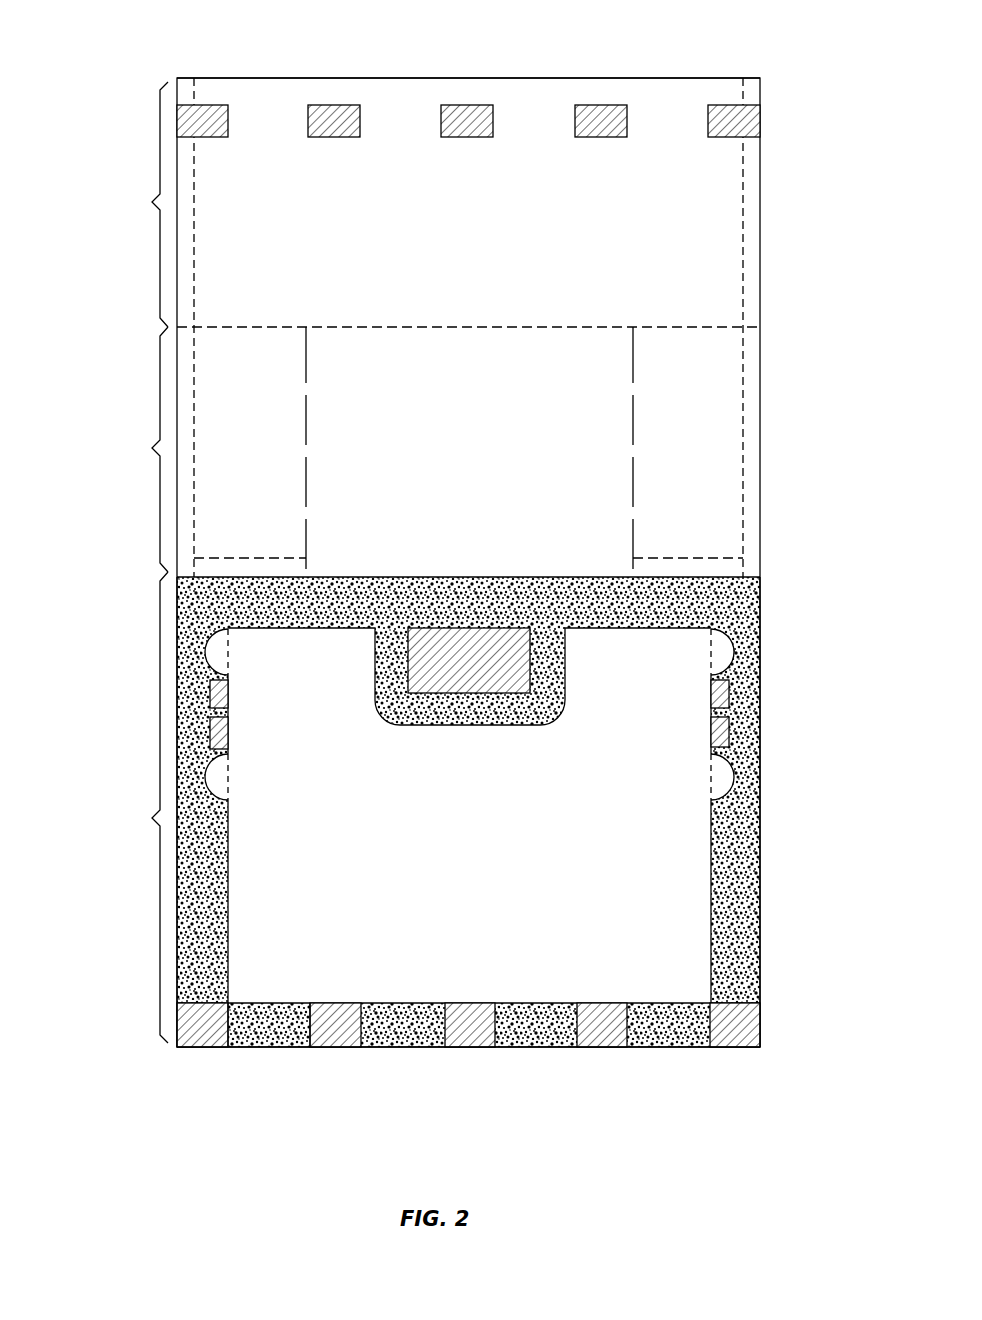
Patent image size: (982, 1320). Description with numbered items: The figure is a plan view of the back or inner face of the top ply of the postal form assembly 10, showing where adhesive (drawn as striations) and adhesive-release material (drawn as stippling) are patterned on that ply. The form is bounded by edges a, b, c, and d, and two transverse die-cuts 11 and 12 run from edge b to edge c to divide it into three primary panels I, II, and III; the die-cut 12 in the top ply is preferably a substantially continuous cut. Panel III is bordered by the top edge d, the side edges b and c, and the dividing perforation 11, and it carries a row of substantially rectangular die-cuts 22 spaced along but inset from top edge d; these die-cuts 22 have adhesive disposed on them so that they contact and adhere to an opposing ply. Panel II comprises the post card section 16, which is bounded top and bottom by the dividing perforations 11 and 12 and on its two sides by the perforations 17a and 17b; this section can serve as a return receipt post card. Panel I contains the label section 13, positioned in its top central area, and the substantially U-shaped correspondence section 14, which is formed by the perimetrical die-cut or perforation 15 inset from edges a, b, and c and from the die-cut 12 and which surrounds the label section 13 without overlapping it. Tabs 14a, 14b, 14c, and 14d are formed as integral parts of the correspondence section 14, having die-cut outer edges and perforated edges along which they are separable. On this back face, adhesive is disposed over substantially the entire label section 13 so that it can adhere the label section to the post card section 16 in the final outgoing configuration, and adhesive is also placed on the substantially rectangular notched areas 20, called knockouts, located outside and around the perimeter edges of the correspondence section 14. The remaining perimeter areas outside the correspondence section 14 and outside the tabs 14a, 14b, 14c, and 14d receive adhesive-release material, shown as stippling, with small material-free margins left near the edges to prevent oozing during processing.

The assembly 10 is at (120, 140).
The transverse die-cut 11 is at (692, 327).
The transverse die-cut 12 is at (697, 577).
The label section 13 is at (498, 673).
The correspondence section 14 is at (630, 978).
The tab 14a is at (213, 652).
The tab 14b is at (213, 777).
The tab 14c is at (722, 777).
The tab 14d is at (723, 652).
The perimetrical die-cut or perforation 15 is at (280, 1007).
The post card section 16 is at (575, 502).
The perforation 17a is at (305, 415).
The perforation 17b is at (633, 420).
The notched areas 20 is at (212, 735).
The die-cuts 22 is at (215, 120).
The edge a is at (677, 1045).
The edge b is at (177, 908).
The edge c is at (762, 878).
The top edge d is at (562, 77).
The Panel I is at (151, 807).
The Panel II is at (149, 449).
The Panel III is at (148, 204).